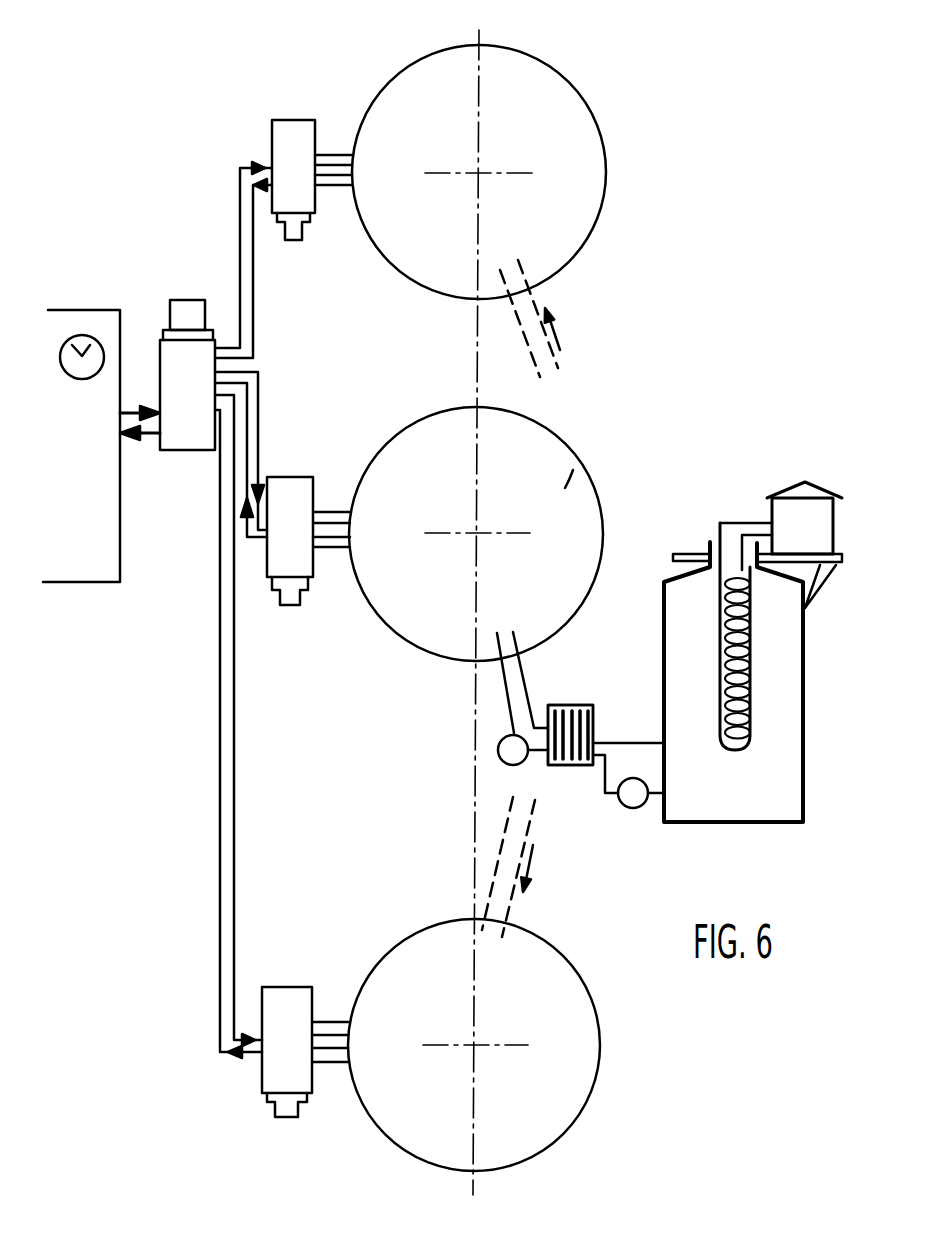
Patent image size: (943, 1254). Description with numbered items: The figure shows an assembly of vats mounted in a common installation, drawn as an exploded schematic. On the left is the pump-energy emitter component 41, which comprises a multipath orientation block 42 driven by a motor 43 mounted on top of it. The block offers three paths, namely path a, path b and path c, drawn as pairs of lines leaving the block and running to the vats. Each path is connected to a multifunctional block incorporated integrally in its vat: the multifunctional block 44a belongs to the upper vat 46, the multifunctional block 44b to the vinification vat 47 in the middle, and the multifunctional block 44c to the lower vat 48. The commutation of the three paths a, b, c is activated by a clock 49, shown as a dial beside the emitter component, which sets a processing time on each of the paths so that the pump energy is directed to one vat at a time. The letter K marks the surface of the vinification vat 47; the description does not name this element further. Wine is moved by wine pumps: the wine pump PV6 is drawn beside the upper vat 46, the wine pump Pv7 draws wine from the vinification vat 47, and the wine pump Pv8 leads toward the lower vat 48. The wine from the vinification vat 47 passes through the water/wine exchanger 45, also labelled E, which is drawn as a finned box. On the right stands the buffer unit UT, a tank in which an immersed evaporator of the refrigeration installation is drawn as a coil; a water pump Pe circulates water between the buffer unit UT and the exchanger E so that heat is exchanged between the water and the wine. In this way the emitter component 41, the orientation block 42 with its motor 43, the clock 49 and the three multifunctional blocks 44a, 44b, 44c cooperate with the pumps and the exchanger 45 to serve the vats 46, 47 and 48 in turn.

The pump-energy emitter component 41 is at (95, 563).
The clock 49 is at (80, 340).
The multipath orientation block 42 is at (192, 437).
The motor 43 is at (191, 298).
The multifunctional block 44a is at (298, 137).
The multifunctional block 44b is at (293, 490).
The multifunctional block 44c is at (292, 1000).
The vat 46 is at (590, 207).
The vinification vat 47 is at (550, 440).
The cylinder surface K is at (578, 488).
The vat 48 is at (577, 1030).
The path a is at (243, 260).
The path b is at (244, 454).
The path c is at (238, 726).
The wine pump PV6 is at (561, 318).
The wine pump Pv7 is at (513, 765).
The water/wine exchanger E is at (570, 760).
The water/wine exchanger 45 is at (570, 770).
The water pump Pe is at (634, 800).
The wine pump Pv8 is at (530, 867).
The buffer unit UT is at (738, 800).